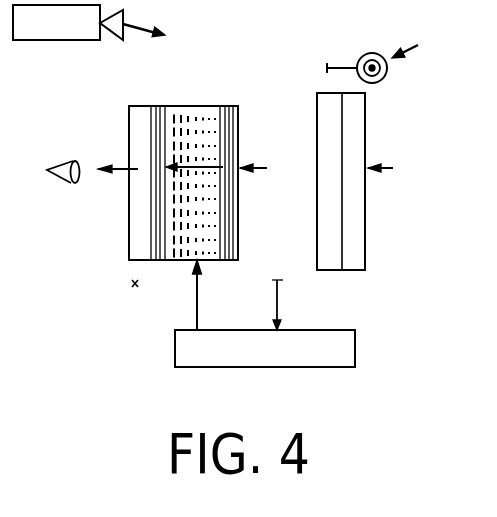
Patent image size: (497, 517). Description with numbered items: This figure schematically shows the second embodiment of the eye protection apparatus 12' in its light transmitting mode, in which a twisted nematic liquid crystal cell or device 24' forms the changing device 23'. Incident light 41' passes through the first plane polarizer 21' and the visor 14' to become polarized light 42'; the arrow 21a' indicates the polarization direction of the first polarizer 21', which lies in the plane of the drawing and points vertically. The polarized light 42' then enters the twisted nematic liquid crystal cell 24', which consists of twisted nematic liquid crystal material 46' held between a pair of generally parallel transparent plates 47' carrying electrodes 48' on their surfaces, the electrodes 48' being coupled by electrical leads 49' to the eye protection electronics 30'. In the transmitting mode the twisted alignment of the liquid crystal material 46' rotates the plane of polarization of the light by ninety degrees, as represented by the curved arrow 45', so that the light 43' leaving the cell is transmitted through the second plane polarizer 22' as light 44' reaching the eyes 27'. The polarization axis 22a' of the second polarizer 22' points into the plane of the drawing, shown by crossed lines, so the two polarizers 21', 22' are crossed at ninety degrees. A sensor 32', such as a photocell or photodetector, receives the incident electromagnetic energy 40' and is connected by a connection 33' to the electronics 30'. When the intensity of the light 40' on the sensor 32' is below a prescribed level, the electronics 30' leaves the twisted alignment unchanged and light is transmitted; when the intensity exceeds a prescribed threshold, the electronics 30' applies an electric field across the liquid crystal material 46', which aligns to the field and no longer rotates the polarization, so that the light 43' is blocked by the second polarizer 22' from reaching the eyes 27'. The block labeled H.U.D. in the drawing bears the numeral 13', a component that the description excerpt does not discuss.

The head-up display 13' is at (89, 45).
The curved arrow 45' is at (195, 57).
The twisted nematic liquid crystal cell 24' is at (238, 66).
The connection 33' is at (314, 174).
The sensor 32' is at (371, 52).
The incident light 40' is at (403, 81).
The electrodes 48' is at (200, 155).
The transparent plates 47' is at (186, 168).
The eyes 27' is at (59, 148).
The transmitted light 44' is at (108, 152).
The light exiting the cell 43' is at (227, 149).
The polarized light 42' is at (265, 188).
The incident light 41' is at (390, 191).
The second plane polarizer 22' is at (150, 183).
The visor 14' is at (321, 181).
The first plane polarizer 21' is at (376, 187).
The arrow 21a' is at (380, 301).
The polarization axis 22a' is at (94, 284).
The liquid crystal material 46' is at (241, 260).
The changing device 23' is at (219, 212).
The eye protection apparatus 12' is at (99, 323).
The electrical leads 49' is at (169, 297).
The eye protection electronics 30' is at (236, 356).